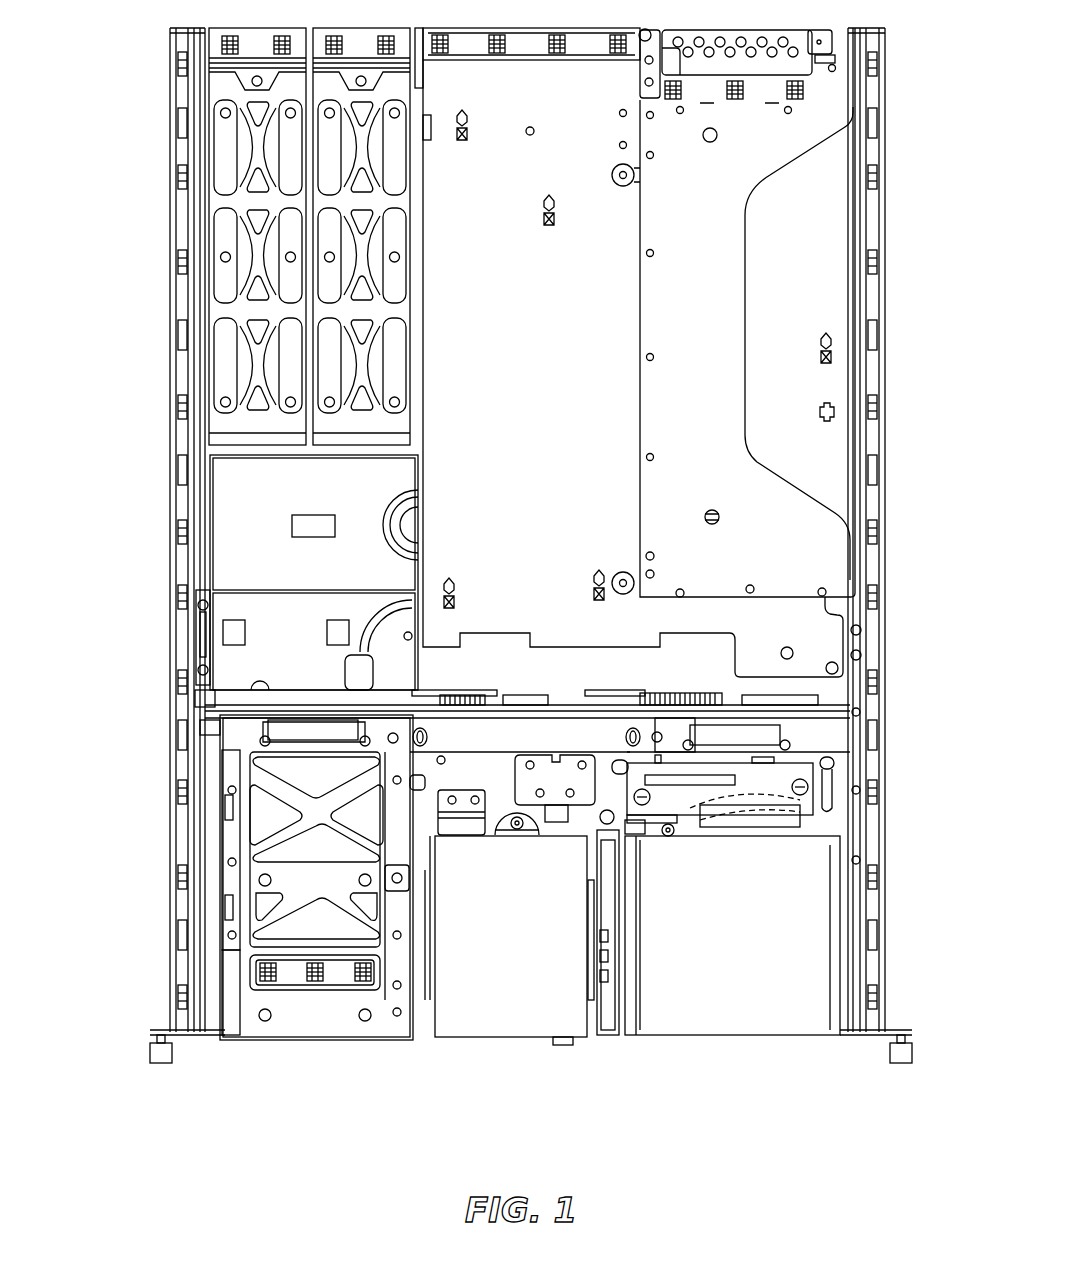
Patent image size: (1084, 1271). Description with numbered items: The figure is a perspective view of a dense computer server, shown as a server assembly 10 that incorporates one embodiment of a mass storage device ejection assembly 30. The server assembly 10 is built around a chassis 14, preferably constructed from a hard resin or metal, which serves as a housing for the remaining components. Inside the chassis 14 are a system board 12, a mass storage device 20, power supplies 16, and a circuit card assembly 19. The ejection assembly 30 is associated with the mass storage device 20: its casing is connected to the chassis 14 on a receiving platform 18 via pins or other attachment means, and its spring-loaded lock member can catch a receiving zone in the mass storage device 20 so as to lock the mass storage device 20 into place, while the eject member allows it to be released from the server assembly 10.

The server assembly 10 is at (157, 672).
The system board 12 is at (795, 628).
The chassis 14 is at (893, 880).
The power supplies 16 is at (243, 397).
The receiving platform 18 is at (828, 806).
The circuit card assembly 19 is at (823, 560).
The mass storage device 20 is at (770, 1035).
The mass storage device ejection assembly 30 is at (612, 1047).